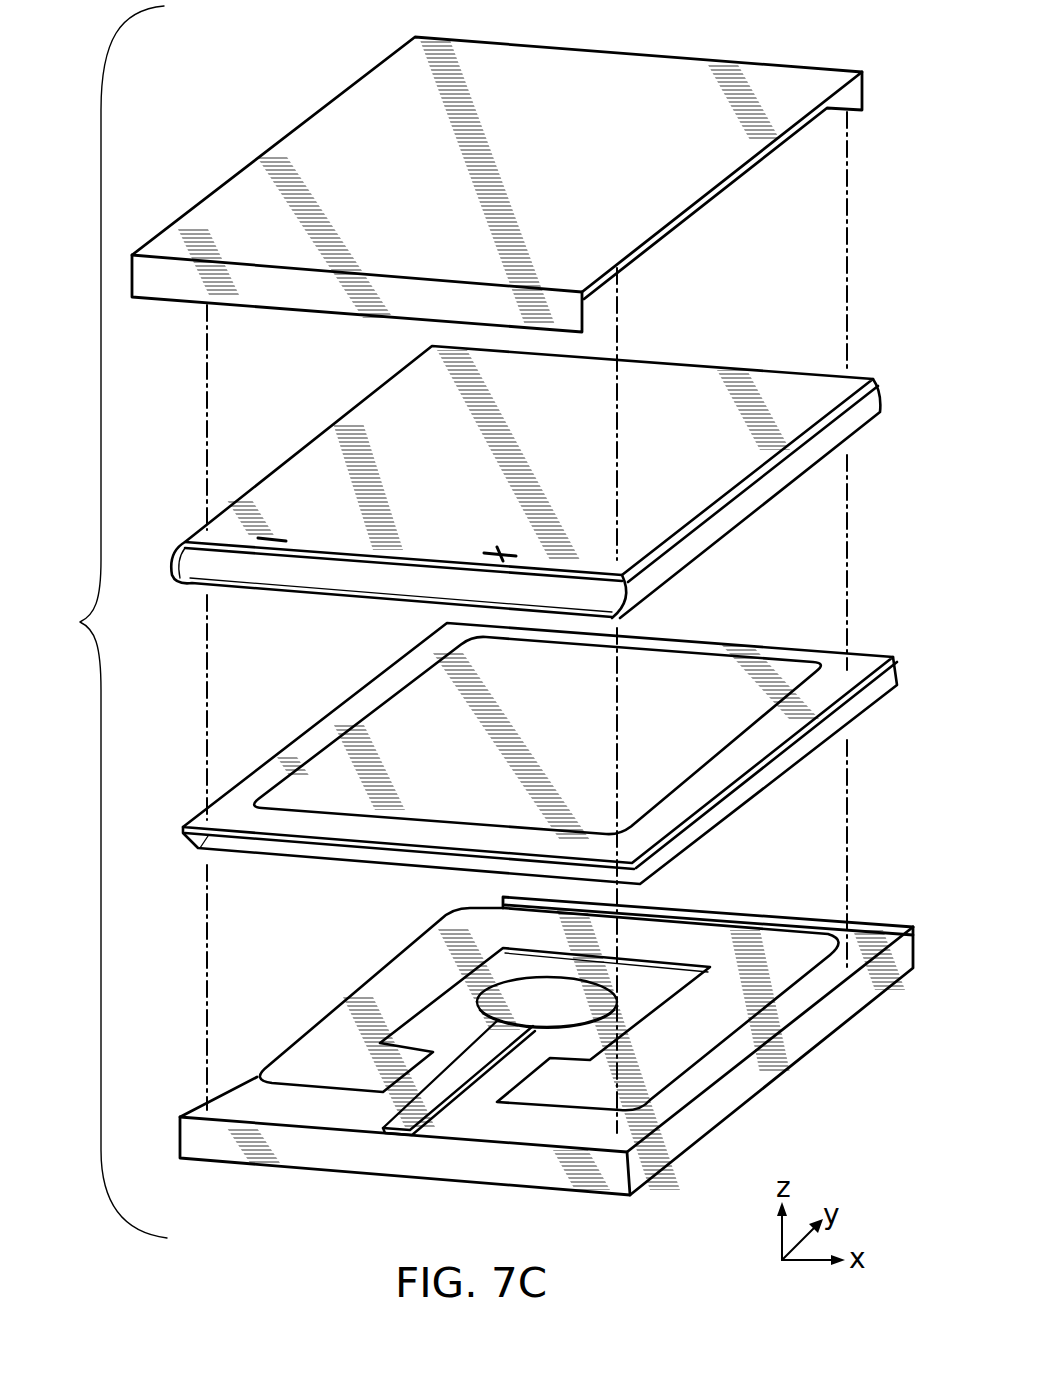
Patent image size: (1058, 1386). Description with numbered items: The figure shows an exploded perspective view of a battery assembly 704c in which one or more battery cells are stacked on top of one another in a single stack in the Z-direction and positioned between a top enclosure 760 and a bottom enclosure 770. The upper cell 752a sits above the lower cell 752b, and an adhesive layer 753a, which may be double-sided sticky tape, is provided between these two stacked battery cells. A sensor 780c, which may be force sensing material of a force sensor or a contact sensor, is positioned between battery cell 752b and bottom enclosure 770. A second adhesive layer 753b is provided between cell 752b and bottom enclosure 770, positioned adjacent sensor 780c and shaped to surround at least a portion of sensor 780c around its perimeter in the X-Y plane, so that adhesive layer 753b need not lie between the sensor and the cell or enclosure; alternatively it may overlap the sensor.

The battery assembly 704c is at (92, 622).
The top enclosure 760 is at (822, 68).
The battery cell 752a is at (882, 402).
The battery cell 752b is at (558, 747).
The adhesive layer 753a is at (322, 766).
The adhesive layer 753b is at (302, 1066).
The bottom enclosure 770 is at (546, 1027).
The sensor 780c is at (496, 1022).